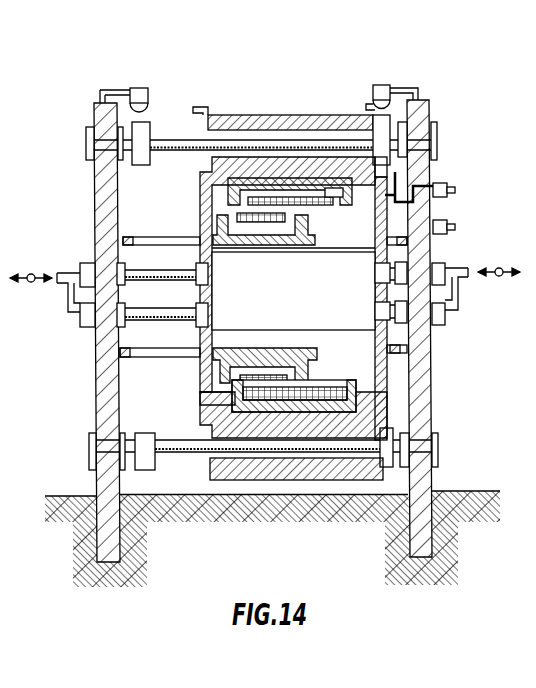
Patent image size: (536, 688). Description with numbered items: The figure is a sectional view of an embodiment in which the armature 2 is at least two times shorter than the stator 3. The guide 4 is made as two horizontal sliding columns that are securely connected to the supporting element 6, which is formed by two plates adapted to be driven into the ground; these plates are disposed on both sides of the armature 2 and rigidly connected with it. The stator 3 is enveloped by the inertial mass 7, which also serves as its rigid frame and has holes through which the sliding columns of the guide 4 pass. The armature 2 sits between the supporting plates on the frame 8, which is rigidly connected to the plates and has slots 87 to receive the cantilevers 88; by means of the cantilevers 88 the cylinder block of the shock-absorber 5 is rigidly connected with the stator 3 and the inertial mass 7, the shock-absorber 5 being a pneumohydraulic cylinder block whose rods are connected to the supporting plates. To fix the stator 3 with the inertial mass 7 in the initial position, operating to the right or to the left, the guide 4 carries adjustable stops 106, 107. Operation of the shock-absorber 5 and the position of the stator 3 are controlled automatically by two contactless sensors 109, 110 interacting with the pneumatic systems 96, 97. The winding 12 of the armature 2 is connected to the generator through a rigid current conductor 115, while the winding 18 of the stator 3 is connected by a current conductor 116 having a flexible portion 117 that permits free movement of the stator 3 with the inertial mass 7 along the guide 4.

The armature 2 is at (307, 370).
The stator 3 is at (240, 200).
The guide 4 is at (163, 142).
The shock-absorber 5 is at (223, 325).
The supporting element 6 is at (102, 487).
The inertial mass 7 is at (323, 115).
The frame 8 is at (205, 360).
The winding 12 is at (280, 377).
The winding 18 is at (227, 212).
The slots 87 is at (162, 362).
The cantilevers 88 is at (193, 390).
The pneumatic system 96 is at (70, 273).
The pneumatic system 97 is at (458, 278).
The adjustable stop 106 is at (152, 470).
The adjustable stop 107 is at (383, 467).
The contactless sensor 109 is at (140, 93).
The contactless sensor 110 is at (381, 91).
The rigid current conductor 115 is at (455, 227).
The current conductor 116 is at (455, 190).
The flexible portion 117 is at (405, 186).